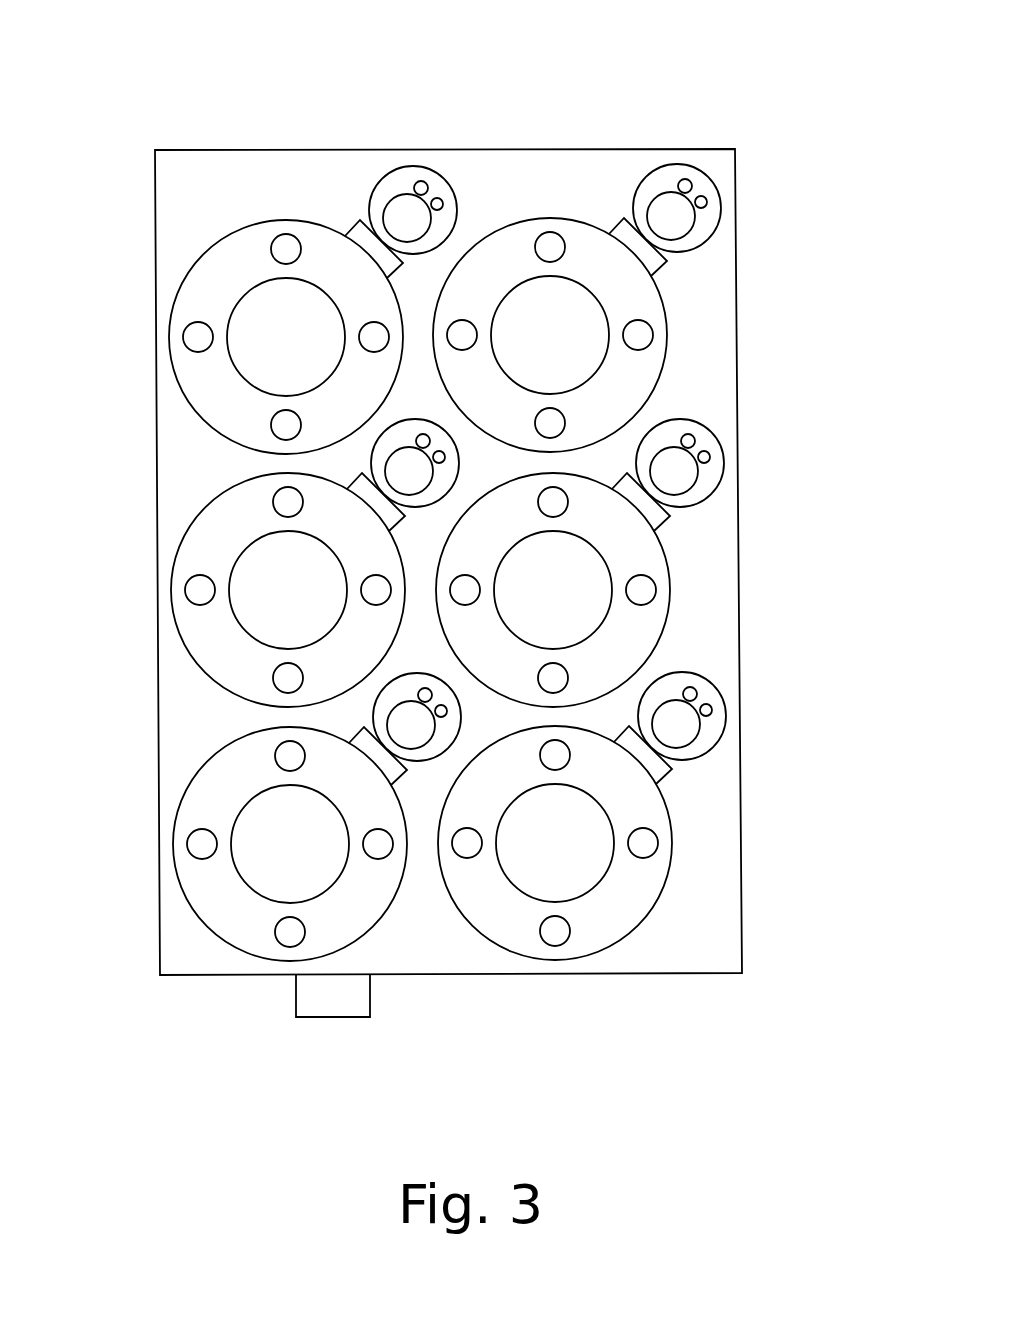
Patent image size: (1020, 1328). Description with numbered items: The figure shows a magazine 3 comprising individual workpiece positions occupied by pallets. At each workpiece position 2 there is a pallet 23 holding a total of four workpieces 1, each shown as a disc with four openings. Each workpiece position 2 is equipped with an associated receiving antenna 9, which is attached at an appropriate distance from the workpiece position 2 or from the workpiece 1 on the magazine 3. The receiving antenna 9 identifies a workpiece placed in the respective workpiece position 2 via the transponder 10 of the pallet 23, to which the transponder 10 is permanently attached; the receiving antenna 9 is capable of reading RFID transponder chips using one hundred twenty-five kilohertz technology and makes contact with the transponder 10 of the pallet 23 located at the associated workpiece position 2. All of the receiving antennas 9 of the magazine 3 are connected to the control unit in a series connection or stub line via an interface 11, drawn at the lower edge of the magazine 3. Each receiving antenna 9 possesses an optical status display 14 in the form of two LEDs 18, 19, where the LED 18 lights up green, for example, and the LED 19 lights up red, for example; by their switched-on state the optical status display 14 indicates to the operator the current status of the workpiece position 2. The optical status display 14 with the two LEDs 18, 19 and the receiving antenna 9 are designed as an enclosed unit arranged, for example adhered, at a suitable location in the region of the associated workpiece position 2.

The workpiece 1 is at (192, 335).
The workpiece position 2 is at (197, 418).
The magazine 3 is at (770, 313).
The receiving antenna 9 is at (402, 208).
The transponder 10 is at (360, 218).
The interface 11 is at (335, 1020).
The optical status display 14 is at (410, 178).
The LED 18 is at (421, 181).
The LED 19 is at (437, 198).
The pallet 23 is at (225, 283).